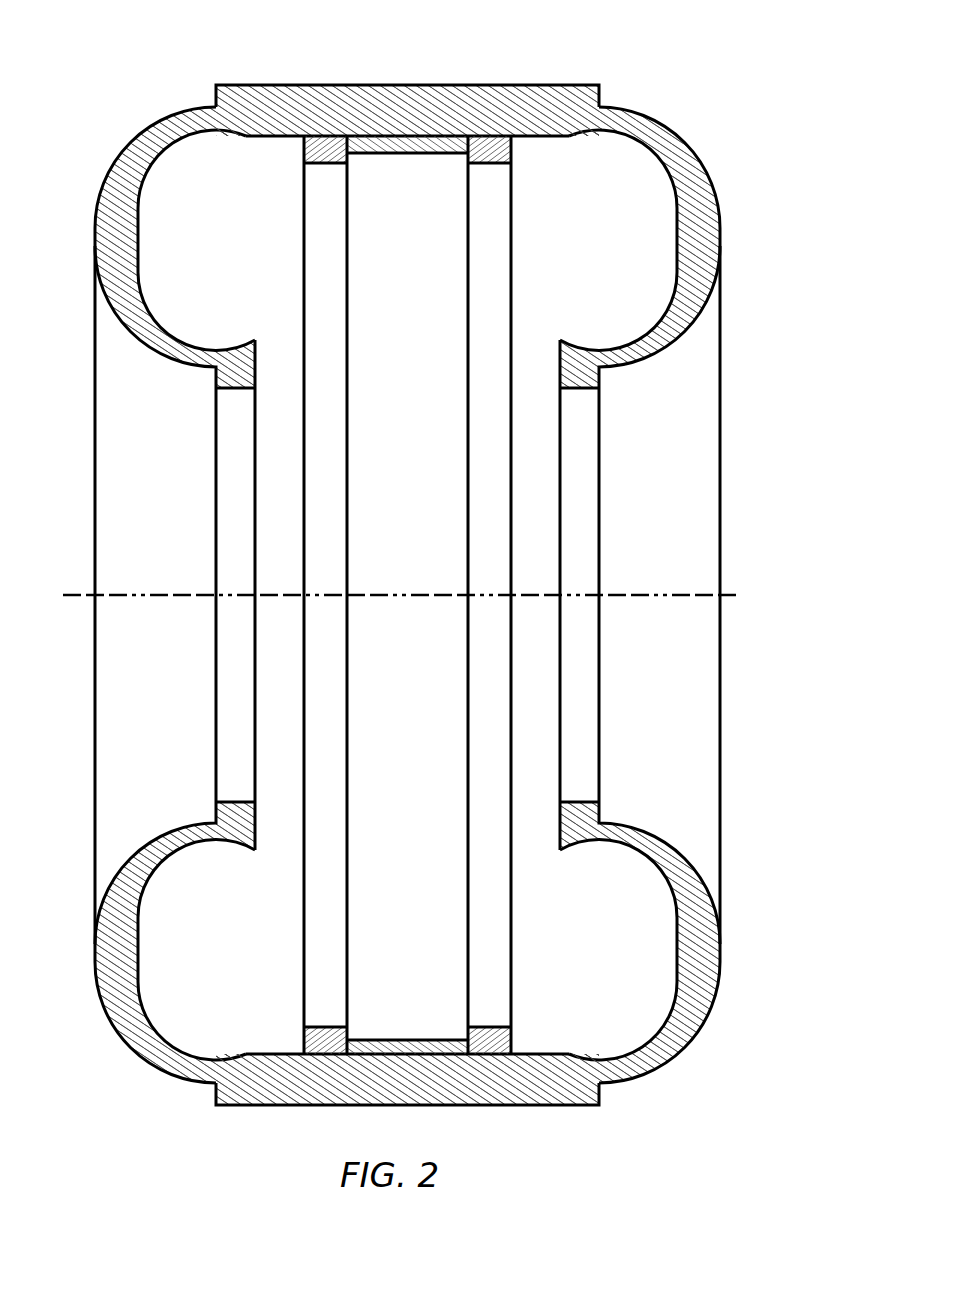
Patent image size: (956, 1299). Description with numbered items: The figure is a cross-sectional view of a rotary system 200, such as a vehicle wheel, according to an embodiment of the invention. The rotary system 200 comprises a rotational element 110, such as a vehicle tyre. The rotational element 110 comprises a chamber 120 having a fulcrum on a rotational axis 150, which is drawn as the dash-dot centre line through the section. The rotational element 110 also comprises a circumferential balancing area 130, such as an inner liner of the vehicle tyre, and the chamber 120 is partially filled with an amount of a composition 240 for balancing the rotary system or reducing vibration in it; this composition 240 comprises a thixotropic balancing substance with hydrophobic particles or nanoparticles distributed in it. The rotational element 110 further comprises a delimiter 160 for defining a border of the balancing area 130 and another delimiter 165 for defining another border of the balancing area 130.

The rotary system 200 is at (307, 28).
The rotational element 110 is at (719, 428).
The chamber 120 is at (242, 244).
The circumferential balancing area 130 is at (393, 135).
The rotational axis 150 is at (724, 595).
The delimiter 160 is at (318, 190).
The another delimiter 165 is at (513, 188).
The composition 240 is at (428, 244).